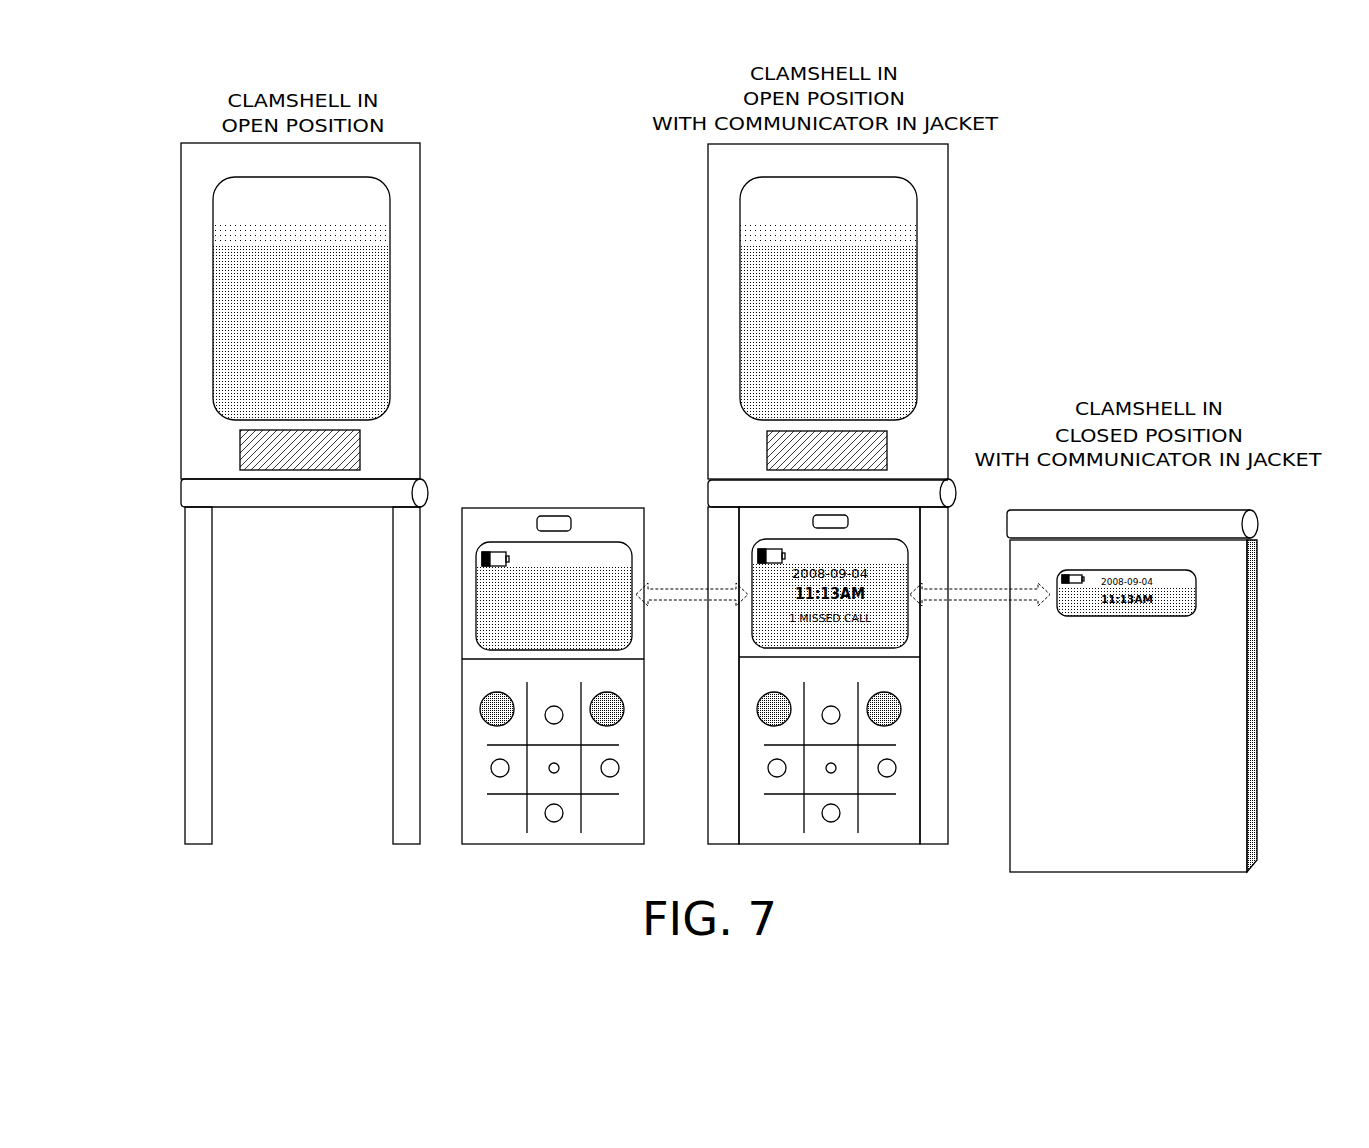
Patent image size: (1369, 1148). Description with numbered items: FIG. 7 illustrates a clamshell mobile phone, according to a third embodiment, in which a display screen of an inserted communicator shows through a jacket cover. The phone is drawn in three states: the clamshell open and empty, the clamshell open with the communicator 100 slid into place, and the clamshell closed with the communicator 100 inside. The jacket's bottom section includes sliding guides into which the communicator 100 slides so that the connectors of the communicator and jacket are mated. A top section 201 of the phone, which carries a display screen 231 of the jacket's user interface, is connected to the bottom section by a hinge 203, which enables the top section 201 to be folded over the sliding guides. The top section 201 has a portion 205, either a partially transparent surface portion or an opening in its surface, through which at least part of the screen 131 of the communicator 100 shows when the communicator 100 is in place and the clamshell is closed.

The communicator 100 is at (597, 520).
The screen 131 is at (523, 557).
The top section 201 is at (205, 162).
The hinge 203 is at (196, 493).
The portion 205 is at (252, 450).
The display screen 231 is at (370, 226).